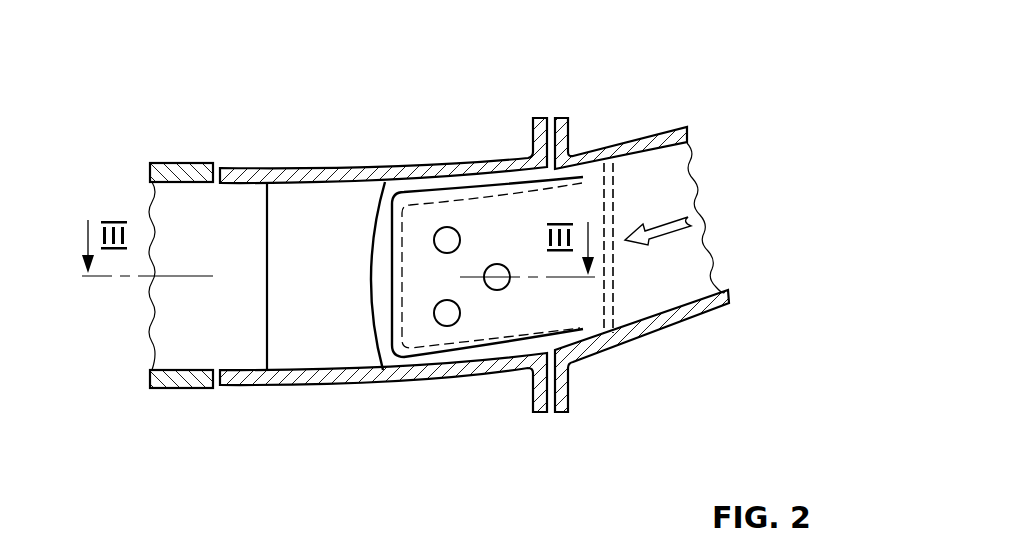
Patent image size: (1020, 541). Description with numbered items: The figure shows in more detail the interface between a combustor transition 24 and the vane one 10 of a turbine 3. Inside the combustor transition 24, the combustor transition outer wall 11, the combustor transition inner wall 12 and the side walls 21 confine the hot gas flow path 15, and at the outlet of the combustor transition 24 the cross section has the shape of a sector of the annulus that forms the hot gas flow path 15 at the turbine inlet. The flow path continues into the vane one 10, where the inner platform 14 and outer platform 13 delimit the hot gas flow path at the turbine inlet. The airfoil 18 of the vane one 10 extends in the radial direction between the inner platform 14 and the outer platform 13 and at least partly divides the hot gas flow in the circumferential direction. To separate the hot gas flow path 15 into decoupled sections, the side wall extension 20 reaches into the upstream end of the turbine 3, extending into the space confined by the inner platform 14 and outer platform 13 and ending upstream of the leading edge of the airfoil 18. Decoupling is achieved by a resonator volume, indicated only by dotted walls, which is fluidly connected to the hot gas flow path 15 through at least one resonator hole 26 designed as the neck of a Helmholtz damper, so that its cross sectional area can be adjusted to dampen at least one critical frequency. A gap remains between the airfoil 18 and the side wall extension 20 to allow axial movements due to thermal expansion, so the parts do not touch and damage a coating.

The vane one 10 is at (280, 110).
The turbine 3 is at (188, 128).
The airfoil 18 is at (321, 246).
The outer platform 13 is at (438, 173).
The inner platform 14 is at (455, 375).
The combustor transition outer wall 11 is at (643, 150).
The combustor transition inner wall 12 is at (641, 328).
The side wall extension 20 is at (485, 242).
The resonator hole 26 is at (445, 317).
The hot gas flow path 15 is at (667, 227).
The side wall 21 is at (678, 278).
The combustor transition 24 is at (782, 222).